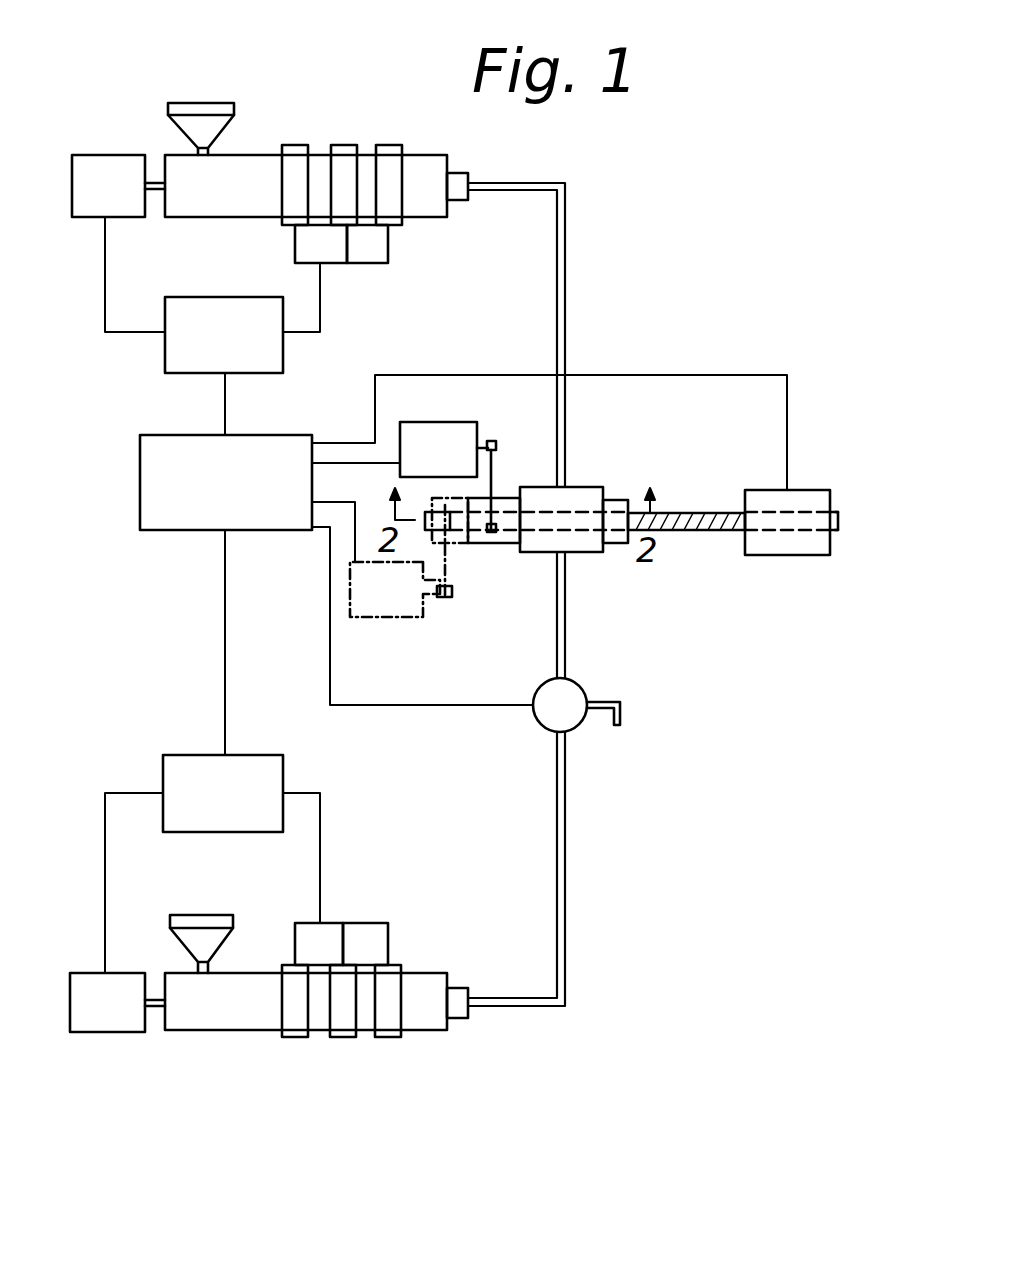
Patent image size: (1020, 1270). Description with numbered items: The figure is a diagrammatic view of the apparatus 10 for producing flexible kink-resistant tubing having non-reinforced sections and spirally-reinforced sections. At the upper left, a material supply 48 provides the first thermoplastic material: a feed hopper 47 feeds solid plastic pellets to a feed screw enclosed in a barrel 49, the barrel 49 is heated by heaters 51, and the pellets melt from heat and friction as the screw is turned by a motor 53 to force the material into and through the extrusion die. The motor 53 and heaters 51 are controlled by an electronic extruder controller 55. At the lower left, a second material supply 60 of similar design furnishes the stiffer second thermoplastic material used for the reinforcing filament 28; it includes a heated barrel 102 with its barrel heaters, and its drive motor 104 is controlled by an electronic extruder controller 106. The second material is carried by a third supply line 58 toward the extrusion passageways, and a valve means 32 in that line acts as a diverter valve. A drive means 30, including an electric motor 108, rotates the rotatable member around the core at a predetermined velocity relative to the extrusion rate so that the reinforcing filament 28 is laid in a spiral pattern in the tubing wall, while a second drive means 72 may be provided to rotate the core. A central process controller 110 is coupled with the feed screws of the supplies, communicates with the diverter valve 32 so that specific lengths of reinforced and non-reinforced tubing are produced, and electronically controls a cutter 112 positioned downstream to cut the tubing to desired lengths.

The apparatus 10 is at (615, 468).
The reinforcing filament 28 is at (703, 512).
The drive means 30 is at (470, 430).
The valve means 32 is at (586, 690).
The feed hopper 47 is at (218, 103).
The material supply 48 is at (316, 142).
The barrel 49 is at (233, 206).
The heaters 51 is at (382, 153).
The motor 53 is at (107, 155).
The electronic extruder controller 55 is at (163, 352).
The third supply line 58 is at (567, 627).
The second material supply 60 is at (322, 1027).
The second drive means 72 is at (360, 620).
The heated barrel 102 is at (296, 1030).
The drive motor 104 is at (92, 1035).
The electronic extruder controller 106 is at (245, 755).
The electric motor 108 is at (423, 432).
The central process controller 110 is at (182, 538).
The cutter 112 is at (808, 490).